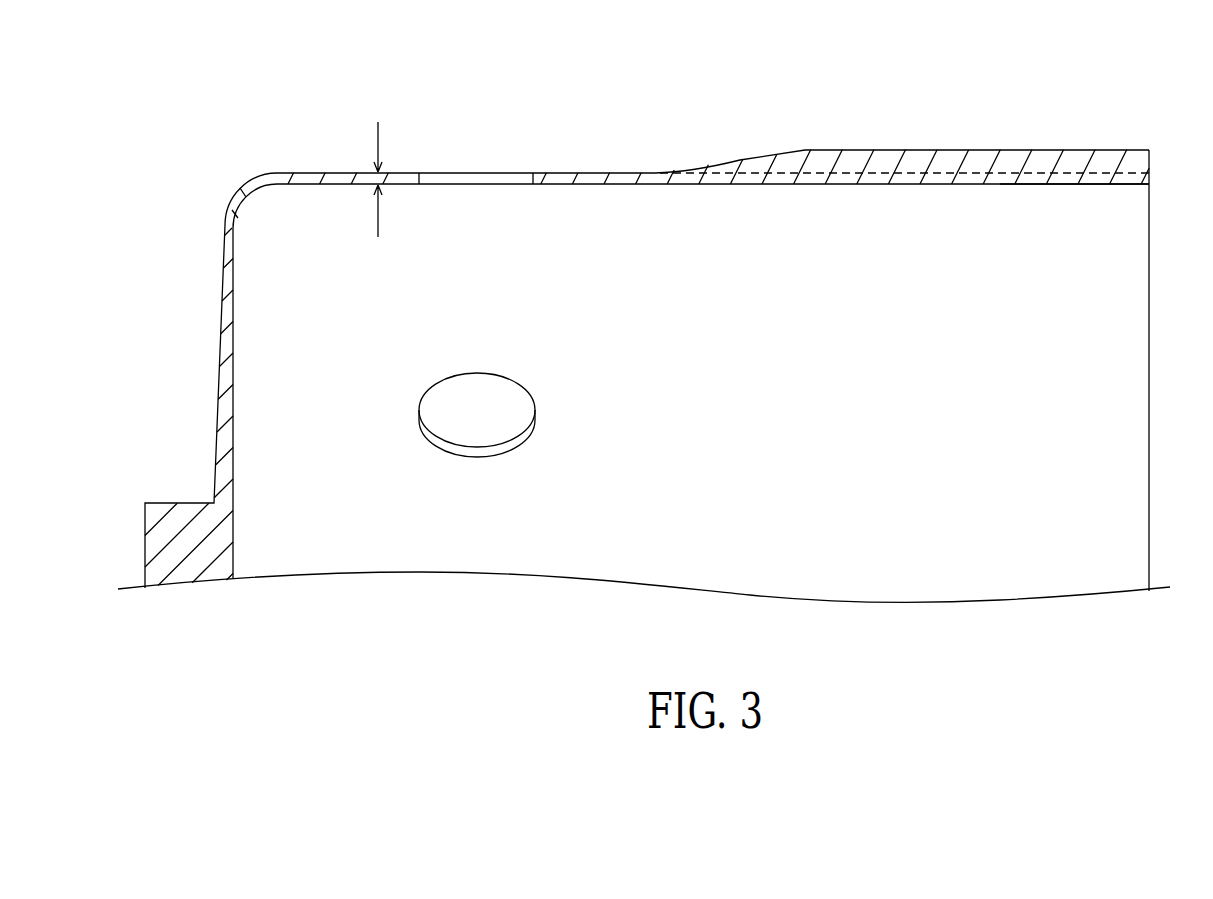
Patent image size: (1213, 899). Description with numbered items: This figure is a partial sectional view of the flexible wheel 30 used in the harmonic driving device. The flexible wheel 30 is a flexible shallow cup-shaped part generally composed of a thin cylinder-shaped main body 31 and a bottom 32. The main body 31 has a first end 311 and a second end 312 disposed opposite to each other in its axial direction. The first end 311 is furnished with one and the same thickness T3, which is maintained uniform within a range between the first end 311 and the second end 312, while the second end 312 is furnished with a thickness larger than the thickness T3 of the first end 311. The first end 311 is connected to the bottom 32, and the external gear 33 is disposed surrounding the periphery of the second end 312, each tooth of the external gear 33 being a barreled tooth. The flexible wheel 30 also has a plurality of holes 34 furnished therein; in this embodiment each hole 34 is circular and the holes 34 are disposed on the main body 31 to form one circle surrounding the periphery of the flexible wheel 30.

The flexible wheel 30 is at (1102, 80).
The main body 31 is at (588, 178).
The first end 311 is at (300, 178).
The second end 312 is at (1057, 180).
The bottom 32 is at (226, 380).
The external gear 33 is at (950, 157).
The hole 34 is at (477, 178).
The thickness T3 is at (380, 162).